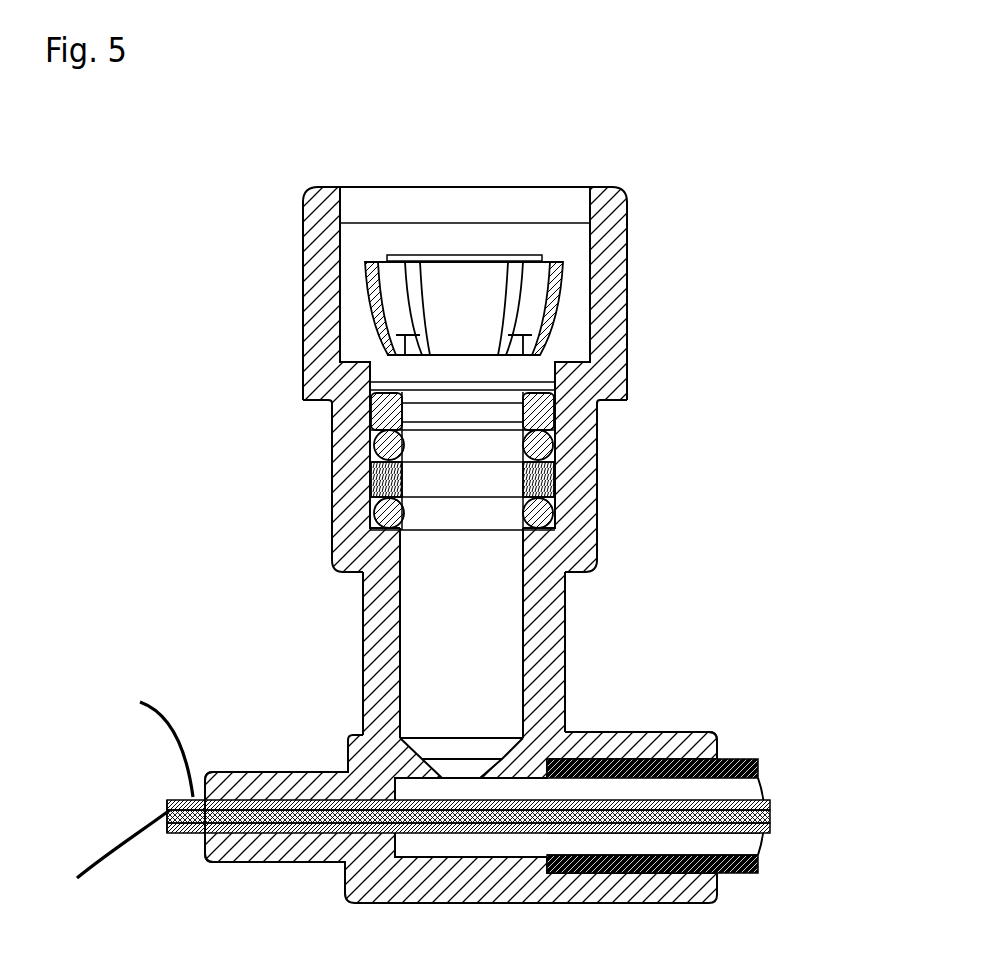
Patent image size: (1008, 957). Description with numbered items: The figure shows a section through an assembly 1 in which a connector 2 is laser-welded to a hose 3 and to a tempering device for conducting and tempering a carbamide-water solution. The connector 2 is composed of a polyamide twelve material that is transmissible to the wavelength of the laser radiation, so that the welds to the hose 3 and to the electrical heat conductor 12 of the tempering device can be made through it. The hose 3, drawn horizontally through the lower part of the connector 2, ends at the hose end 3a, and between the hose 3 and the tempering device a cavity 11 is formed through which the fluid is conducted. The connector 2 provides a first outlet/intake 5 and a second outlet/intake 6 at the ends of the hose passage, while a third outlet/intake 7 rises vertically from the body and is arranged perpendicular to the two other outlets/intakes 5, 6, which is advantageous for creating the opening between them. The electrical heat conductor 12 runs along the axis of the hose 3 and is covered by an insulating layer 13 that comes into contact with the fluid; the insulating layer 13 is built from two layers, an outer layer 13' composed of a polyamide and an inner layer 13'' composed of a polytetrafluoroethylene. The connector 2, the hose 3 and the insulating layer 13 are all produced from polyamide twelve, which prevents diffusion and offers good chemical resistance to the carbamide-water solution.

The assembly 1 is at (684, 385).
The connector 2 is at (555, 646).
The hose 3 is at (762, 768).
The hose end 3a is at (583, 760).
The first outlet/intake 5 is at (822, 831).
The second outlet/intake 6 is at (172, 782).
The third outlet/intake 7 is at (537, 179).
The cavity 11 is at (742, 845).
The electrical heat conductor 12 is at (198, 815).
The insulating layer 13 is at (468, 738).
The outer layer 13' is at (140, 737).
The inner layer 13'' is at (91, 858).